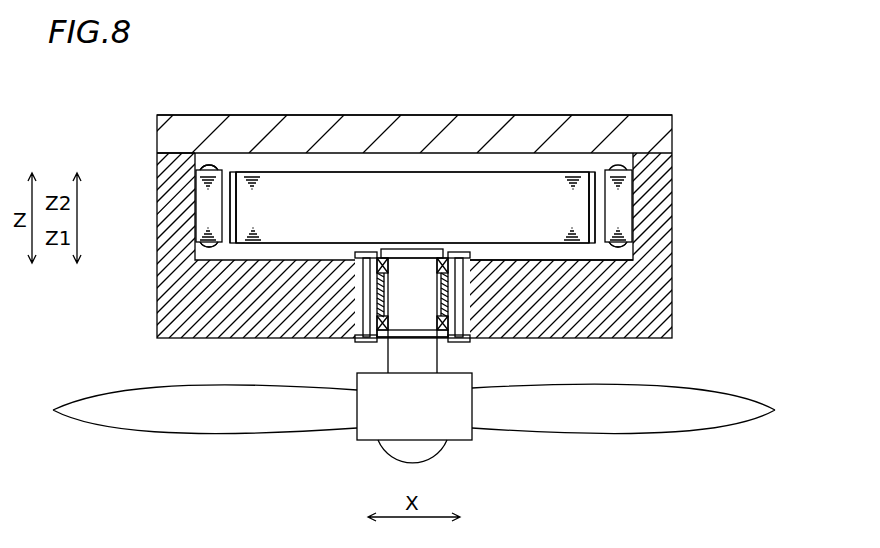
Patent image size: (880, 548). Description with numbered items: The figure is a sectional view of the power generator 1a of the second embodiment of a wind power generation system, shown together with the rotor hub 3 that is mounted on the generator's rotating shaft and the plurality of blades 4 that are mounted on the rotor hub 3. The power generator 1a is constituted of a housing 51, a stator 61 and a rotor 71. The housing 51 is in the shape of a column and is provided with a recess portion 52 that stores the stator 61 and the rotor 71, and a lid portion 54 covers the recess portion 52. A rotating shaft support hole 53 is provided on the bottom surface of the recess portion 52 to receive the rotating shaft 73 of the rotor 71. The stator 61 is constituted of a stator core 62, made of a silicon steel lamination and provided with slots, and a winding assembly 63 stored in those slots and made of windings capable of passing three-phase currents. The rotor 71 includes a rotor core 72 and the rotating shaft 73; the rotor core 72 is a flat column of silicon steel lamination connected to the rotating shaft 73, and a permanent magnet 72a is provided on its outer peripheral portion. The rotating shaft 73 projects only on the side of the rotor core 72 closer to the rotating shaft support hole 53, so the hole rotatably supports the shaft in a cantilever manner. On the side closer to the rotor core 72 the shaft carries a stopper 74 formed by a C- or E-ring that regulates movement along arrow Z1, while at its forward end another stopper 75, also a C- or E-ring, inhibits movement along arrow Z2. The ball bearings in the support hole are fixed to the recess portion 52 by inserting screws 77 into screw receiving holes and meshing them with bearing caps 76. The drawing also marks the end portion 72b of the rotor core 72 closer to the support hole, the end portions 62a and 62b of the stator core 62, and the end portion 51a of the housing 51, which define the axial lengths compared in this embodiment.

The power generator 1a is at (688, 82).
The rotor hub 3 is at (370, 440).
The blades 4 is at (313, 430).
The housing 51 is at (660, 323).
The end portion of the housing 51a is at (166, 153).
The recess portion 52 is at (557, 247).
The rotating shaft support hole 53 is at (452, 335).
The lid portion 54 is at (347, 128).
The stator 61 is at (623, 193).
The stator core 62 is at (625, 215).
The end portion of the stator core 62a is at (221, 170).
The end portion of the stator core 62b is at (208, 250).
The winding assembly 63 is at (625, 247).
The rotor 71 is at (497, 180).
The rotor core 72 is at (548, 181).
The permanent magnet 72a is at (592, 175).
The end portion of the rotor core 72b is at (250, 244).
The rotating shaft 73 is at (408, 248).
The stopper 74 is at (432, 248).
The stopper 75 is at (393, 334).
The bearing caps 76 is at (382, 249).
The screws 77 is at (362, 318).